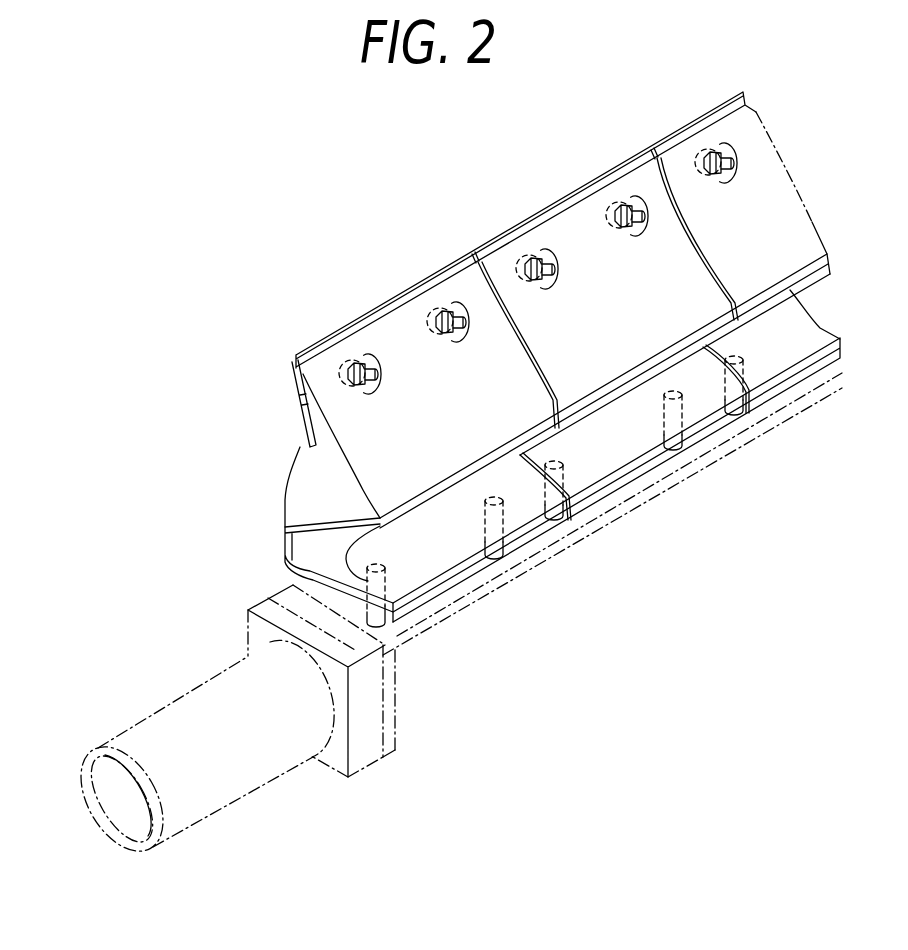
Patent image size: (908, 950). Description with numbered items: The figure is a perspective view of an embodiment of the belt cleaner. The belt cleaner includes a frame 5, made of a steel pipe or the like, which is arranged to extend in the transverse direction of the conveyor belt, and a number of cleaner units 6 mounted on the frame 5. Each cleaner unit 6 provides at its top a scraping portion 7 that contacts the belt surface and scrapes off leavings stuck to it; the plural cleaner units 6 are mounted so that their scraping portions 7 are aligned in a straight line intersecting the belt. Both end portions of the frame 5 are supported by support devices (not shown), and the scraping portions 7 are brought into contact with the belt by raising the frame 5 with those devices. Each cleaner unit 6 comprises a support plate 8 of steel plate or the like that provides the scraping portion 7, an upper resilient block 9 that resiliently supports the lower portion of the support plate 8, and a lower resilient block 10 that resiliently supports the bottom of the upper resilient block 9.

The frame 5 is at (188, 678).
The cleaner unit 6 is at (485, 575).
The scraping portion 7 is at (388, 302).
The support plate 8 is at (308, 433).
The upper resilient block 9 is at (325, 488).
The lower resilient block 10 is at (325, 554).